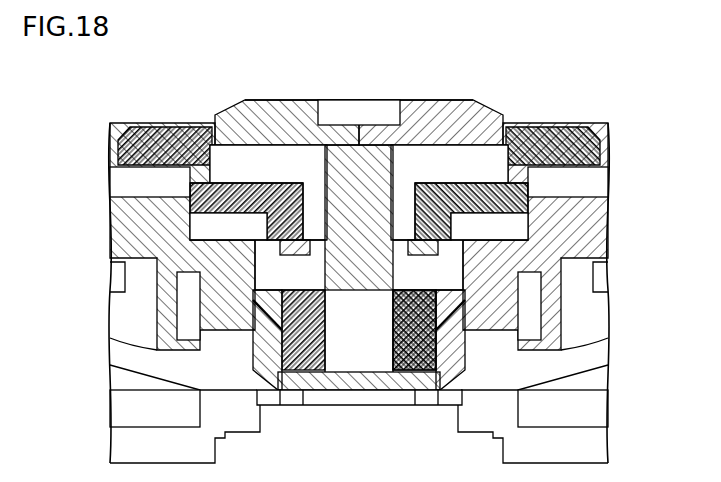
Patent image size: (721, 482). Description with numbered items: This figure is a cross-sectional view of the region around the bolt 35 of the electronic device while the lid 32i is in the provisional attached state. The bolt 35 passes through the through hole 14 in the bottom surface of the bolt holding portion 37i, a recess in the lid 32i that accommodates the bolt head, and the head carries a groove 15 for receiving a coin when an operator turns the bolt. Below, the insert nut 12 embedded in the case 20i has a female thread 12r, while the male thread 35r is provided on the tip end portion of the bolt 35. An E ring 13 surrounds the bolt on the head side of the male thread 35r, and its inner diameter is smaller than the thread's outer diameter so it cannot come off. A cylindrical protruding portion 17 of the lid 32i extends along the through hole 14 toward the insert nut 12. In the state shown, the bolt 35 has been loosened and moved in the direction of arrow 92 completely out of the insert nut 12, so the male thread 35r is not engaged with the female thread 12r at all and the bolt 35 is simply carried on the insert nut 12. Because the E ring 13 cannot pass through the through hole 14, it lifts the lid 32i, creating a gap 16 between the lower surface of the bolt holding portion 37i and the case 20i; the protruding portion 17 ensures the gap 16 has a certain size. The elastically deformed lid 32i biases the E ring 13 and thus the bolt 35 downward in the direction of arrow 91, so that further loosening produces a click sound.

The insert nut 12 is at (316, 372).
The female thread 12r is at (388, 345).
The E ring 13 is at (443, 243).
The through hole 14 is at (410, 250).
The groove 15 is at (342, 112).
The gap 16 is at (498, 227).
The protruding portion 17 is at (263, 225).
The case 20i is at (120, 249).
The lid 32i is at (579, 121).
The bolt 35 is at (436, 98).
The male thread 35r is at (418, 372).
The bolt holding portion 37i is at (463, 212).
The arrow 91 is at (634, 418).
The arrow 92 is at (634, 142).